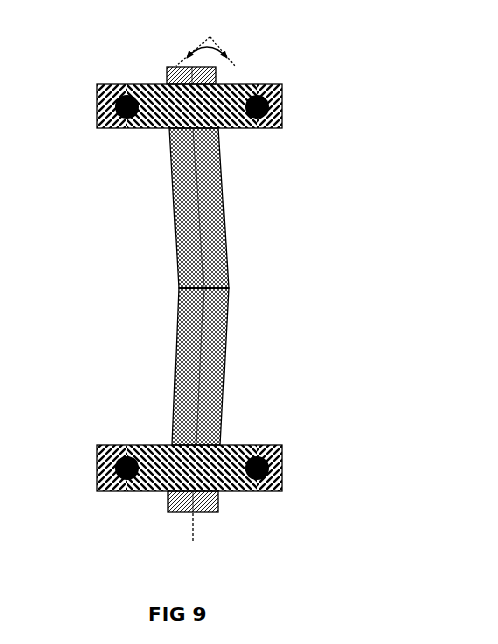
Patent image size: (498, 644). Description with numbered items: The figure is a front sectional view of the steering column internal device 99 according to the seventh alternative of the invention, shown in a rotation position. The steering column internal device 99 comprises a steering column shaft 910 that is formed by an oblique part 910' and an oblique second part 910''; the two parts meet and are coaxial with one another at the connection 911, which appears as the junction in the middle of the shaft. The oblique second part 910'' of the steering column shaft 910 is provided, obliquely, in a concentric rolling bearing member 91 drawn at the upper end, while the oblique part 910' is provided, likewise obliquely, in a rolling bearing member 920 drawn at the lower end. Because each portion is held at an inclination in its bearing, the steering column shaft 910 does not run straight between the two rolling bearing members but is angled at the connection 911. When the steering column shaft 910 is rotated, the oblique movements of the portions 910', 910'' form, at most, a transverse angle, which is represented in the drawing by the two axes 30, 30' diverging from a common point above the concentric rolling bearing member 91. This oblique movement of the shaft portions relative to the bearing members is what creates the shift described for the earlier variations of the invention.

The steering column internal device 99 is at (111, 232).
The concentric rolling bearing member 91 is at (286, 104).
The rolling bearing member 920 is at (287, 467).
The steering column shaft 910 is at (208, 286).
The oblique second part 910'' is at (250, 208).
The oblique part 910' is at (247, 366).
The connection 911 is at (177, 289).
The axis 30 is at (166, 36).
The axis 30' is at (253, 36).